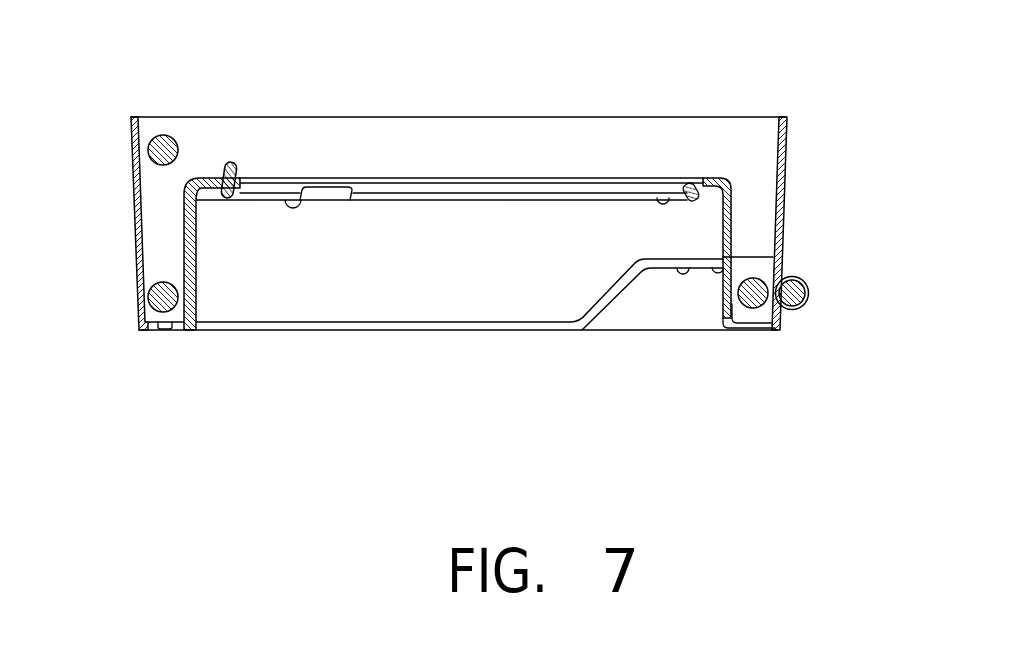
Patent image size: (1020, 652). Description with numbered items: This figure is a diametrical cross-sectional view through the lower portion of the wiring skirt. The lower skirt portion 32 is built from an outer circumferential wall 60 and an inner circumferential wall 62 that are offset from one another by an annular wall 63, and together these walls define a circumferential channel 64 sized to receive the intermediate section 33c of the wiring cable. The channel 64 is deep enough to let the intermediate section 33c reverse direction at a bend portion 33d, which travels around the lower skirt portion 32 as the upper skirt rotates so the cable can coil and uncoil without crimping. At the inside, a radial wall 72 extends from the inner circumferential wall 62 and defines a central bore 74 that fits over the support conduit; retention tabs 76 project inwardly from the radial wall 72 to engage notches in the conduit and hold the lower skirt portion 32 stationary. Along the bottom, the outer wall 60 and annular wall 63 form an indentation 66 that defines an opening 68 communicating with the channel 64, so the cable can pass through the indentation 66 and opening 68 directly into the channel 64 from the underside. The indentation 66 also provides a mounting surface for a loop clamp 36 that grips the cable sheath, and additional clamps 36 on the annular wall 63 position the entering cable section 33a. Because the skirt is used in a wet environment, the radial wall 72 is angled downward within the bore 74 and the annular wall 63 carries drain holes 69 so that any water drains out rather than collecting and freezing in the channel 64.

The lower skirt portion 32 is at (786, 165).
The outer circumferential wall 60 is at (133, 117).
The annular wall 63 is at (148, 333).
The bend portion 33d is at (166, 197).
The drain holes 69 is at (165, 333).
The inner circumferential wall 62 is at (200, 257).
The central bore 74 is at (242, 176).
The retention tabs 76 is at (348, 193).
The radial wall 72 is at (695, 192).
The channel 64 is at (760, 225).
The indentation 66 is at (738, 327).
The opening 68 is at (763, 318).
The intermediate section 33c is at (750, 307).
The entering cable section 33a is at (804, 306).
The clamp 36 is at (806, 283).